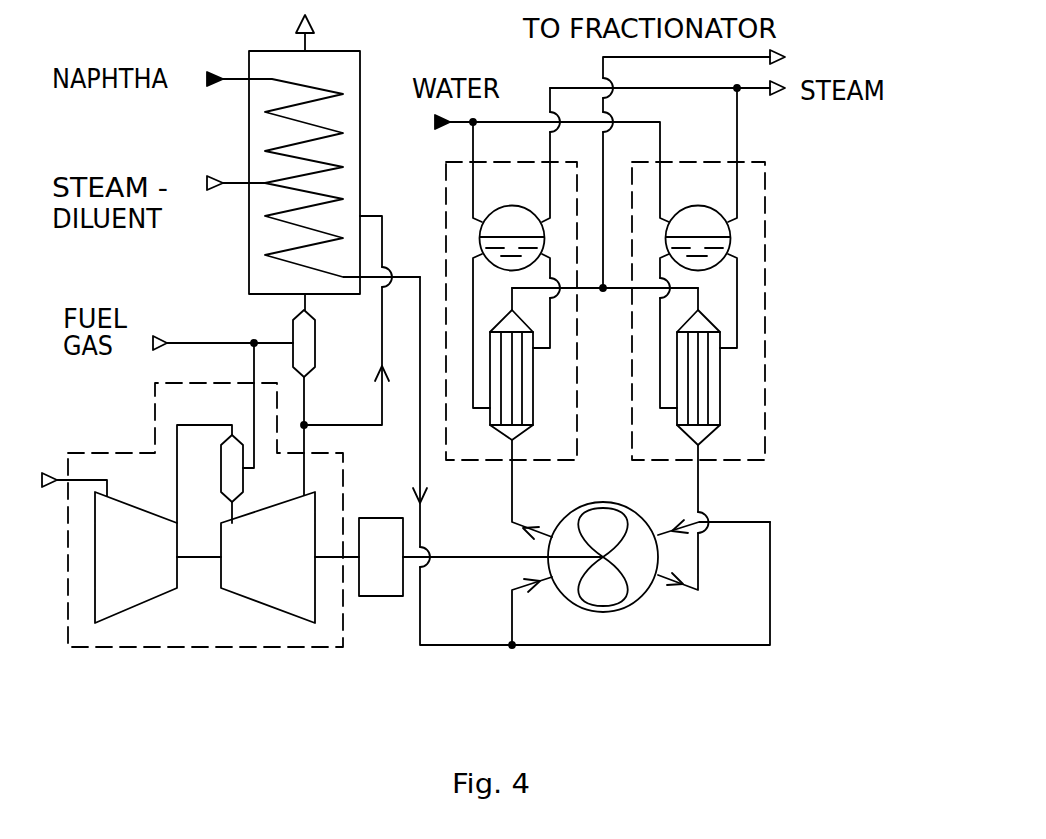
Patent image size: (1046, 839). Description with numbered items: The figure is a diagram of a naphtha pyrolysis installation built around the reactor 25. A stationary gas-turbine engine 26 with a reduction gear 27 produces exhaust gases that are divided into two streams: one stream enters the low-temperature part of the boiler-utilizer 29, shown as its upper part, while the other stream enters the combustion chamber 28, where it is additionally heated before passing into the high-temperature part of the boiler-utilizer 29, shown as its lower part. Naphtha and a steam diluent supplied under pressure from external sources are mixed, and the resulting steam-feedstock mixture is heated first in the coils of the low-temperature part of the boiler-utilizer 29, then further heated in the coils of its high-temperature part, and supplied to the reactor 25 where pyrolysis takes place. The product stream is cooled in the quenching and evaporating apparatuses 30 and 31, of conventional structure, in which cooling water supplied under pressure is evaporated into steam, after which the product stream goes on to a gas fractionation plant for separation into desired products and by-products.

The reactor 25 is at (641, 542).
The stationary gas-turbine engine 26 is at (192, 515).
The reduction gear 27 is at (381, 557).
The combustion chamber 28 is at (324, 343).
The boiler-utilizer 29 is at (313, 162).
The quenching and evaporating apparatus 30 is at (511, 311).
The quenching and evaporating apparatus 31 is at (698, 337).